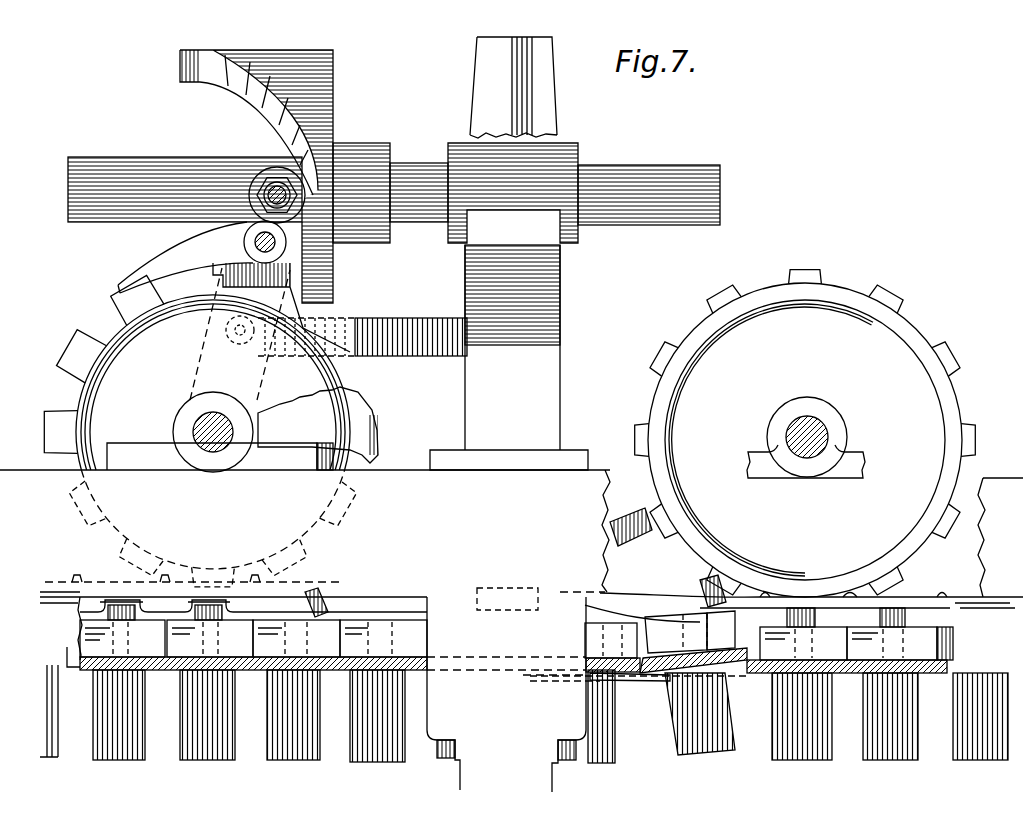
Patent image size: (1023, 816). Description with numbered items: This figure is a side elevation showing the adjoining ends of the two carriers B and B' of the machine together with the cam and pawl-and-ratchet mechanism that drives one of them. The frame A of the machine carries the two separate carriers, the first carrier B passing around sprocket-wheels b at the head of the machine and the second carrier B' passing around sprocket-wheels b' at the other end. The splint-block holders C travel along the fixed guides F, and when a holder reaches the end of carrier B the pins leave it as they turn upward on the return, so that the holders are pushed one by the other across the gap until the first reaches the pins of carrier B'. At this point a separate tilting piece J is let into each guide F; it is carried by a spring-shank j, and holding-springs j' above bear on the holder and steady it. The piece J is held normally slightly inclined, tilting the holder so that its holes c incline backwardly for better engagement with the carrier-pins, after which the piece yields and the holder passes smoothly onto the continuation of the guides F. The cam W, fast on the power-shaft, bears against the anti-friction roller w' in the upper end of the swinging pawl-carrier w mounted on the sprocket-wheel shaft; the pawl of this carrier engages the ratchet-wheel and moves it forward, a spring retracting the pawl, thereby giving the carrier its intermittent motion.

The cam W is at (226, 60).
The shaft r is at (155, 172).
The anti-friction roller w' is at (275, 180).
The swinging pawl-carrier w is at (231, 334).
The sprocket-wheel b is at (329, 424).
The sprocket-wheel b' is at (810, 433).
The frame A is at (430, 457).
The carrier B is at (233, 617).
The carrier B' is at (811, 596).
The splint-block holder C is at (238, 628).
The hole c is at (296, 628).
The guide F is at (83, 668).
The support pillar Z is at (300, 730).
The tilting piece J is at (665, 673).
The spring-shank j is at (640, 686).
The holding-spring j' is at (642, 610).